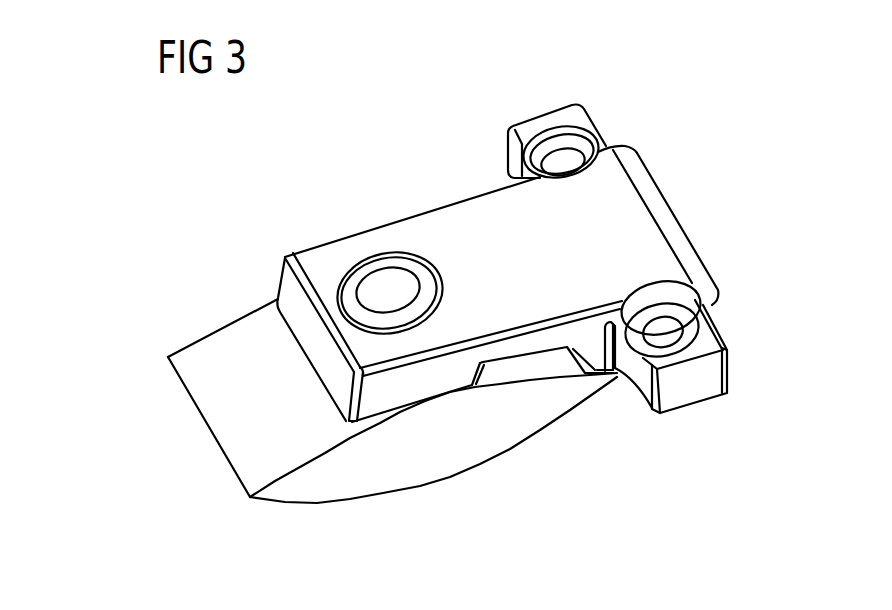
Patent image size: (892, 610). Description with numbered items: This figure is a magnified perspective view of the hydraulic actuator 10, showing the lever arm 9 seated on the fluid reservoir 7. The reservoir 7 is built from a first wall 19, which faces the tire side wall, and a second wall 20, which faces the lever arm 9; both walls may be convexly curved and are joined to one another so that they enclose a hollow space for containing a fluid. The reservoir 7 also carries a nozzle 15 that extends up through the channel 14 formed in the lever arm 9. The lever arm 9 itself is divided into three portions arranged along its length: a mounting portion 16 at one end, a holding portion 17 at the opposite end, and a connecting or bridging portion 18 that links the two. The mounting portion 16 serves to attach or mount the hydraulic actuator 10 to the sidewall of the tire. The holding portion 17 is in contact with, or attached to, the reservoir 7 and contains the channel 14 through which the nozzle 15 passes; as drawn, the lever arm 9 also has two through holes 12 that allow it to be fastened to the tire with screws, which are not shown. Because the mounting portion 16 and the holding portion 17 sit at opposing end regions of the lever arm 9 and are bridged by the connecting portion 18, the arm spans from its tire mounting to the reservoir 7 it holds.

The reservoir 7 is at (418, 473).
The lever arm 9 is at (487, 208).
The holding device 10 is at (335, 150).
The through holes 12 is at (562, 160).
The channel 14 is at (393, 280).
The nozzle 15 is at (353, 282).
The mounting portion 16 is at (635, 217).
The holding portion 17 is at (412, 390).
The connecting portion 18 is at (437, 212).
The first wall 19 is at (507, 453).
The second wall 20 is at (213, 430).